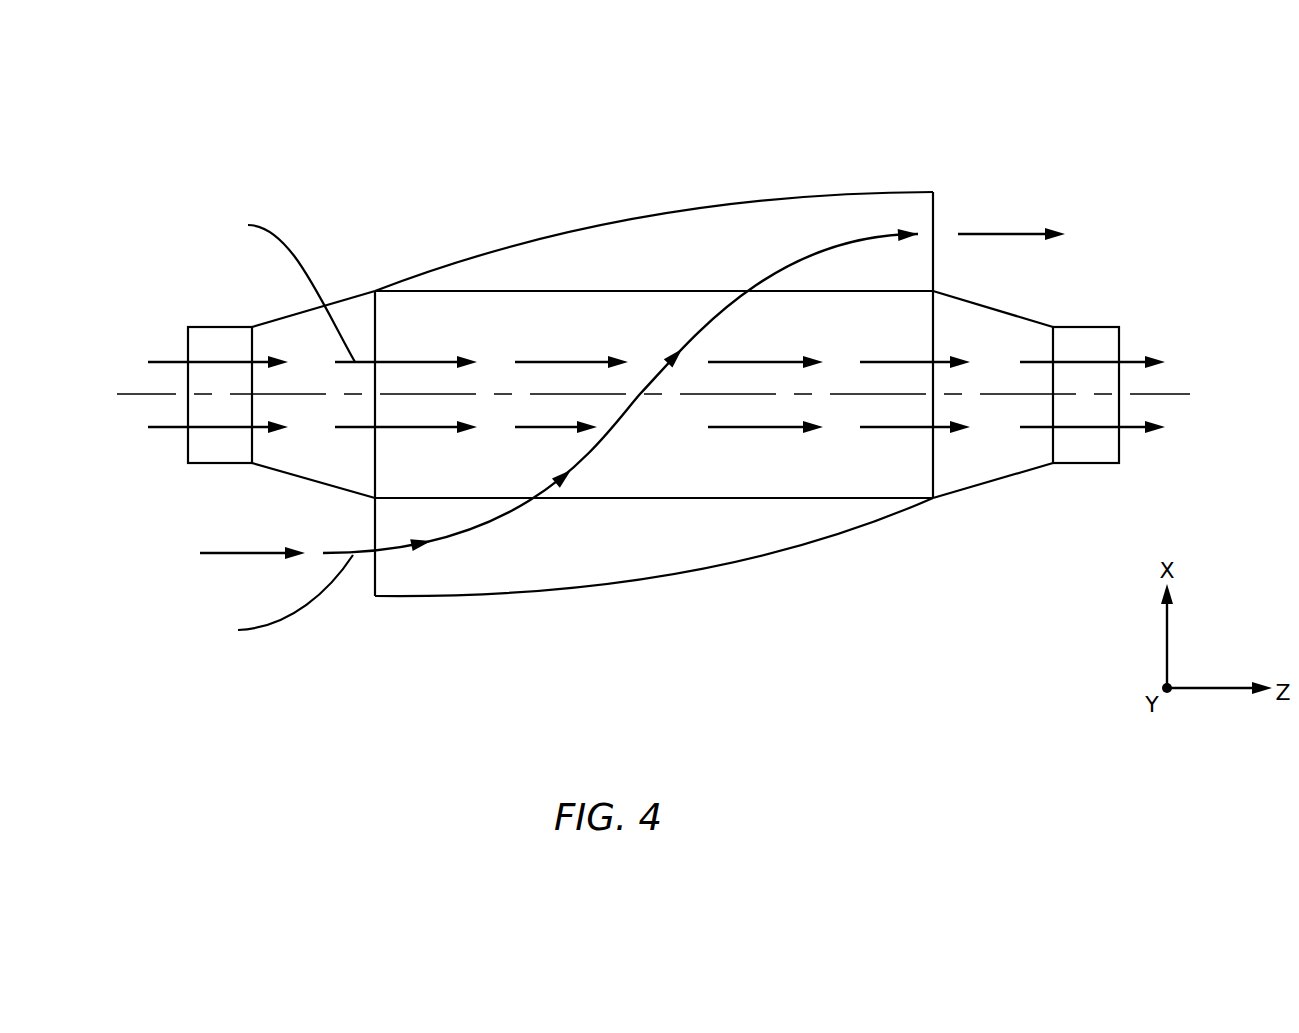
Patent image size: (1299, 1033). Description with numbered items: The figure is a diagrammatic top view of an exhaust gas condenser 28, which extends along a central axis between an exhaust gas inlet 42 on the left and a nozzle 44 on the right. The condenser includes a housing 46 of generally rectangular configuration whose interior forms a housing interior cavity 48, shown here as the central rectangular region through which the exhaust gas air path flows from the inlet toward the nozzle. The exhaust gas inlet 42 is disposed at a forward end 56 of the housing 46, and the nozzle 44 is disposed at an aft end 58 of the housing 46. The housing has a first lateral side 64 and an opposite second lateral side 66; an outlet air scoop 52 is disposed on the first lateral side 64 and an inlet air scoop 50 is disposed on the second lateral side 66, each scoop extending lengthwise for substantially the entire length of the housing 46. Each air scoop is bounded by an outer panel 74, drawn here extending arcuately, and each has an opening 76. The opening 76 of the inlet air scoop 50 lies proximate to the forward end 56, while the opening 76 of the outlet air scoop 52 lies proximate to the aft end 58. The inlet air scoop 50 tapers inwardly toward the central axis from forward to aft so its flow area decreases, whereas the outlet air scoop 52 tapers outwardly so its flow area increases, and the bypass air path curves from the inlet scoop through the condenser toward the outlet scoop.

The exhaust gas condenser 28 is at (314, 88).
The exhaust gas inlet 42 is at (188, 500).
The nozzle 44 is at (1103, 295).
The housing 46 is at (890, 535).
The housing interior cavity 48 is at (917, 478).
The inlet air scoop 50 is at (393, 640).
The outlet air scoop 52 is at (895, 150).
The forward end 56 is at (372, 498).
The aft end 58 is at (965, 278).
The first lateral side 64 is at (533, 270).
The second lateral side 66 is at (797, 508).
The outer panel 74 is at (745, 200).
The opening 76 is at (933, 210).